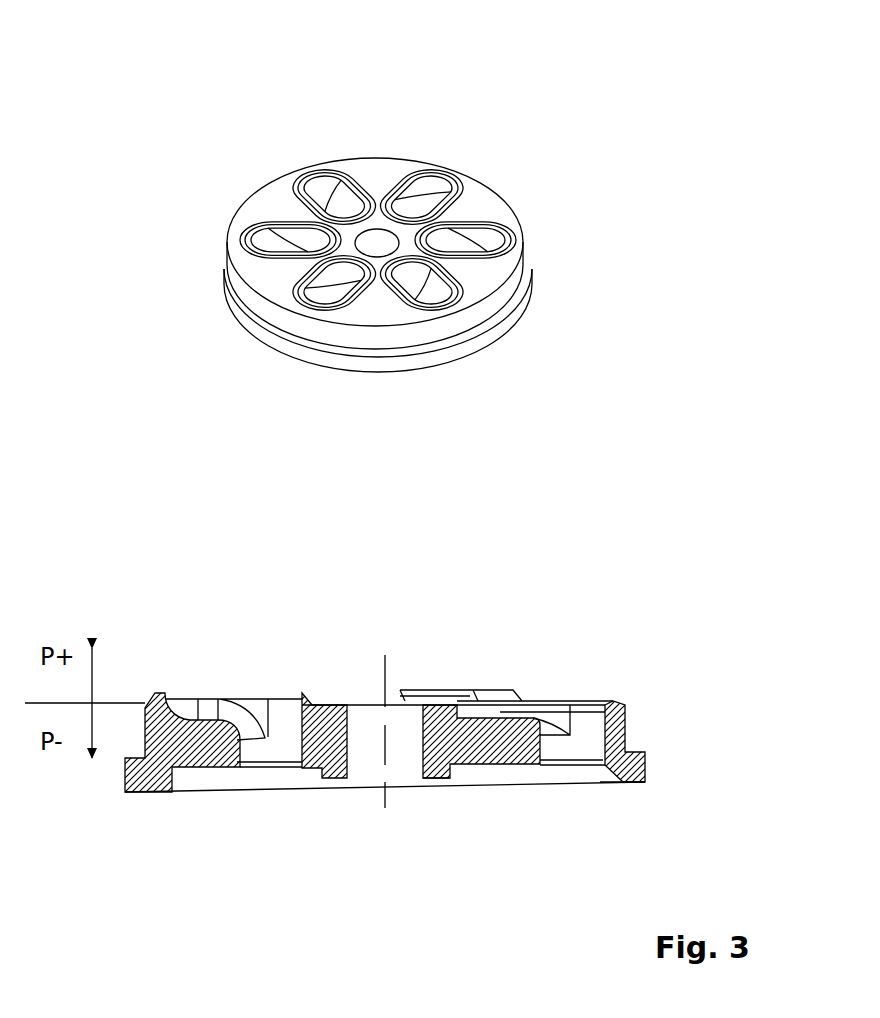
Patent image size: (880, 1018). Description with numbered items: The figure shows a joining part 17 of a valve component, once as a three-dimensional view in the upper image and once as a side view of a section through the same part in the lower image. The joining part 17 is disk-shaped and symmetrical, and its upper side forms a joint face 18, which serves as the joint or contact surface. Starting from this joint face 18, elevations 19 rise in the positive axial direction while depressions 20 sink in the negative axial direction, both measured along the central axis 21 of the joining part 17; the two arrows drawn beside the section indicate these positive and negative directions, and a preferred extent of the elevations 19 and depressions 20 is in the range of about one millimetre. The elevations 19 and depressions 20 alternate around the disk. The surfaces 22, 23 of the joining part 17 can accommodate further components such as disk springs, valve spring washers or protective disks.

The joining part 17 is at (274, 146).
The joint face 18 is at (485, 202).
The elevations 19 is at (458, 177).
The depressions 20 is at (518, 237).
The central axis 21 is at (392, 678).
The surface 22 is at (622, 783).
The surface 23 is at (437, 782).